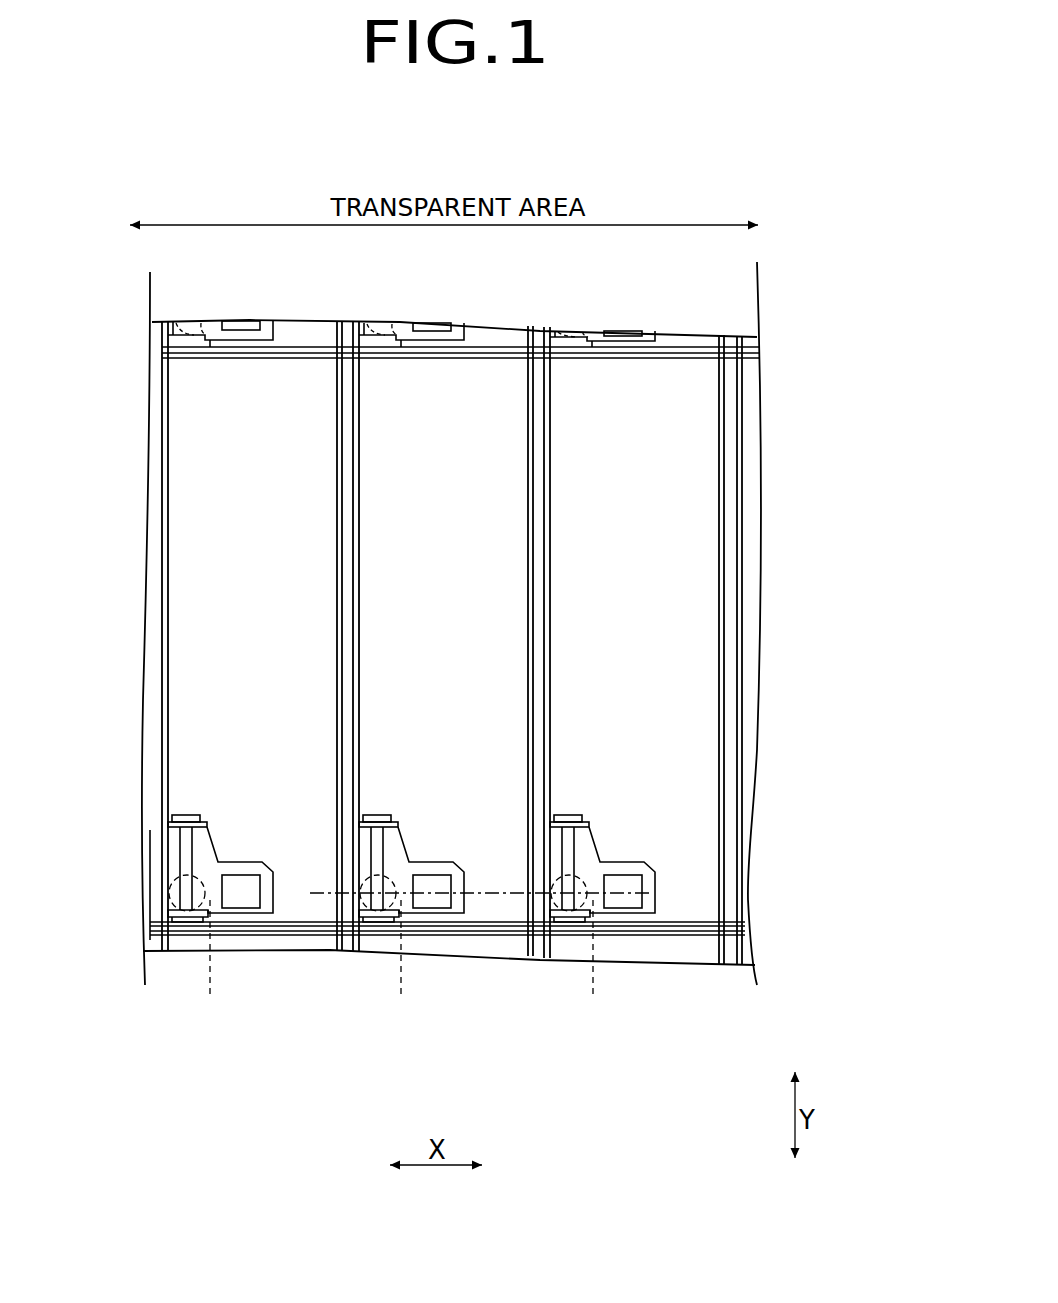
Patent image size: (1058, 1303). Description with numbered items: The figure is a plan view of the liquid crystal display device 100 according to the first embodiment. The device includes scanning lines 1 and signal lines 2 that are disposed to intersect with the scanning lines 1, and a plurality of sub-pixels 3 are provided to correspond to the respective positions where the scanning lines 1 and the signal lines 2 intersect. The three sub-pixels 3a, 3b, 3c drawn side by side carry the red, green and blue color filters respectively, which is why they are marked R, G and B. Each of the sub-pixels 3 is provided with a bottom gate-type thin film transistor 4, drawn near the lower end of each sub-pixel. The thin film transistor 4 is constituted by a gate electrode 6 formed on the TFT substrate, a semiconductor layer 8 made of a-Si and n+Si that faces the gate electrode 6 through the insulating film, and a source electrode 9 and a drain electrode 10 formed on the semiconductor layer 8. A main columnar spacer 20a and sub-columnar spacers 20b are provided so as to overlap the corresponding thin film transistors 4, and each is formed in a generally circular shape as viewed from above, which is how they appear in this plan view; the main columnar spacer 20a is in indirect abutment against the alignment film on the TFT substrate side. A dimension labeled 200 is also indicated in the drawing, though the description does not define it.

The liquid crystal display device 100 is at (745, 170).
The scanning line 1 is at (704, 936).
The signal line 2 is at (148, 956).
The sub-pixel 3 is at (461, 330).
The sub-pixel 3a is at (279, 378).
The sub-pixel 3b is at (486, 378).
The sub-pixel 3c is at (679, 378).
The thin film transistor 4 is at (273, 838).
The gate electrode 6 is at (188, 815).
The semiconductor layer 8 is at (197, 822).
The source electrode 9 is at (173, 835).
The drain electrode 10 is at (247, 862).
The main columnar spacer 20a is at (409, 963).
The sub-columnar spacer 20b is at (409, 963).
The reference line 200 is at (322, 896).